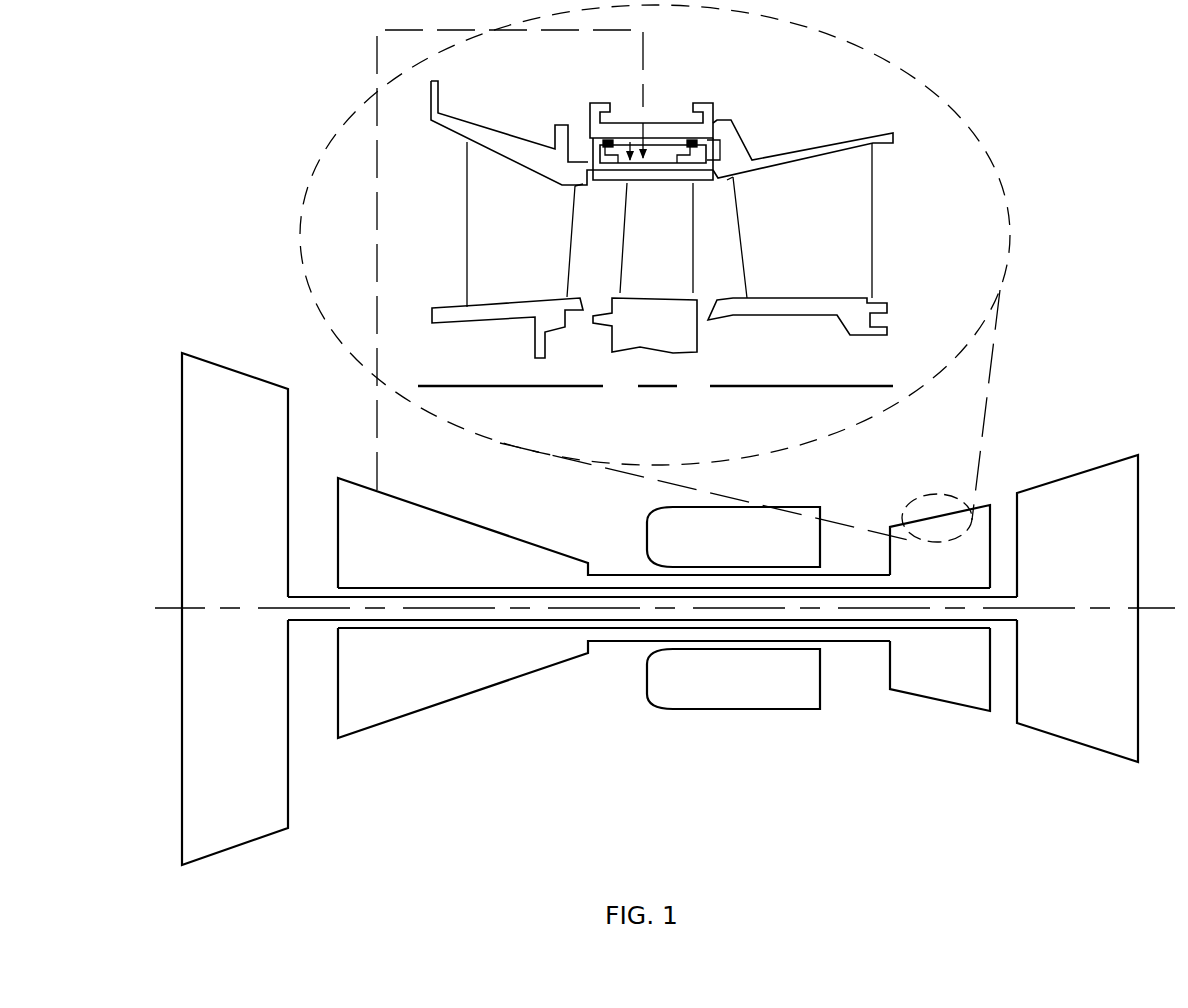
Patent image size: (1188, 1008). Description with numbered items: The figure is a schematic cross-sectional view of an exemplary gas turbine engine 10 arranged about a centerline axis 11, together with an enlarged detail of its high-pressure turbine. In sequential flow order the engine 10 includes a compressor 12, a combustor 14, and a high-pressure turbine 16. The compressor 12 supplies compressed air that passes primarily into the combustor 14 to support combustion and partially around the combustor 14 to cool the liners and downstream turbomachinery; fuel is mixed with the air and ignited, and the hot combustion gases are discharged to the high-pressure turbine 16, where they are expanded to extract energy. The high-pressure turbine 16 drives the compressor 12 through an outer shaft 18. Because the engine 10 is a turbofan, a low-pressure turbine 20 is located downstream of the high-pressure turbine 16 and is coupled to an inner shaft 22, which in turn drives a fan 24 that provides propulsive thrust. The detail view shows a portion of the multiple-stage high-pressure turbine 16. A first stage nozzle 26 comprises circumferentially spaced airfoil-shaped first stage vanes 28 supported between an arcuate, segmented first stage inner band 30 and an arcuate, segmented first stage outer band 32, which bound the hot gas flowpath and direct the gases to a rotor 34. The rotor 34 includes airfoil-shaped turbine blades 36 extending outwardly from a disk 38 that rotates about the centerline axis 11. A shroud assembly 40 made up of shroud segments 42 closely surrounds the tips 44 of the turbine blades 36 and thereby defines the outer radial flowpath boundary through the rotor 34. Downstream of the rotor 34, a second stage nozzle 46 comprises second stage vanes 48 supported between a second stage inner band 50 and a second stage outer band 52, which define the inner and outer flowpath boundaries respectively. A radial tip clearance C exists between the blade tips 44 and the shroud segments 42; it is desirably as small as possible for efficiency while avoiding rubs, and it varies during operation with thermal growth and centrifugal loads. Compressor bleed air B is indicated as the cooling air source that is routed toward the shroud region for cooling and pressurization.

The gas turbine engine 10 is at (652, 435).
The centerline axis 11 is at (175, 608).
The compressor 12 is at (460, 694).
The combustor 14 is at (754, 694).
The high-pressure turbine 16 is at (967, 694).
The outer shaft 18 is at (616, 638).
The low-pressure turbine 20 is at (1095, 694).
The inner shaft 22 is at (323, 617).
The fan 24 is at (255, 694).
The first stage nozzle 26 is at (485, 333).
The first stage vanes 28 is at (535, 294).
The first stage inner band 30 is at (448, 313).
The first stage outer band 32 is at (462, 136).
The rotor 34 is at (605, 330).
The turbine blades 36 is at (675, 294).
The disk 38 is at (673, 348).
The shroud assembly 40 is at (677, 157).
The shroud segments 42 is at (585, 190).
The tips 44 is at (700, 210).
The second stage nozzle 46 is at (798, 325).
The second stage vanes 48 is at (817, 294).
The second stage inner band 50 is at (857, 317).
The second stage outer band 52 is at (835, 147).
The compressor bleed air B is at (377, 448).
The radial tip clearance C is at (628, 189).